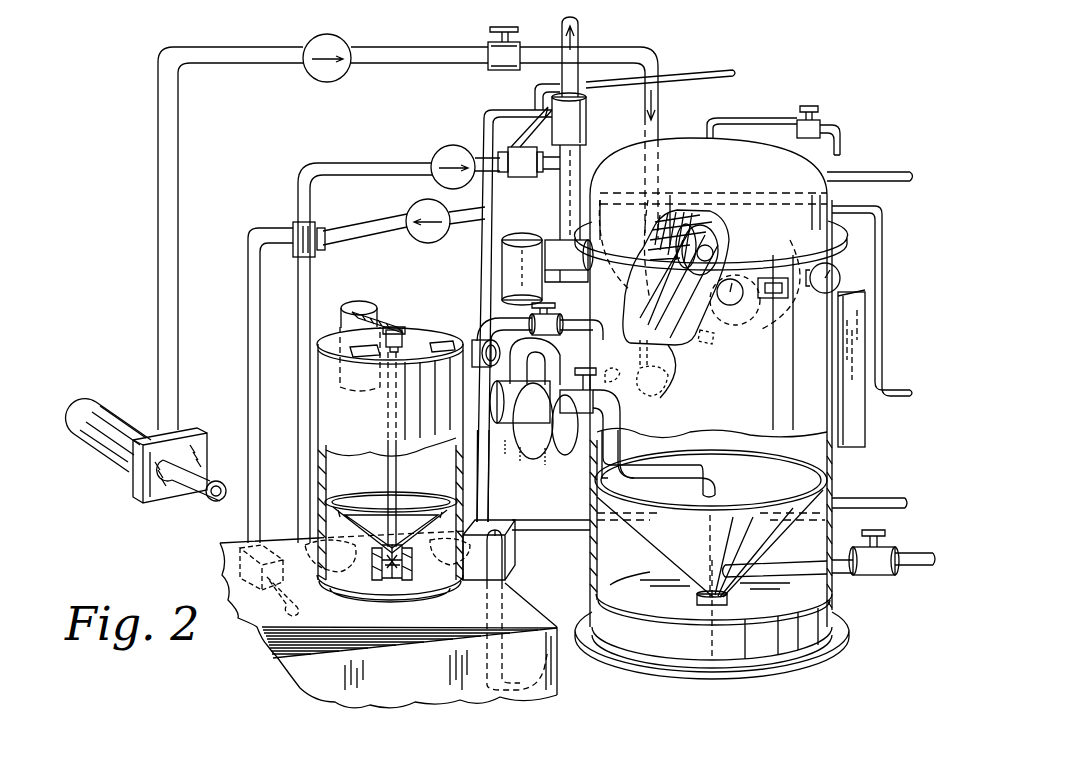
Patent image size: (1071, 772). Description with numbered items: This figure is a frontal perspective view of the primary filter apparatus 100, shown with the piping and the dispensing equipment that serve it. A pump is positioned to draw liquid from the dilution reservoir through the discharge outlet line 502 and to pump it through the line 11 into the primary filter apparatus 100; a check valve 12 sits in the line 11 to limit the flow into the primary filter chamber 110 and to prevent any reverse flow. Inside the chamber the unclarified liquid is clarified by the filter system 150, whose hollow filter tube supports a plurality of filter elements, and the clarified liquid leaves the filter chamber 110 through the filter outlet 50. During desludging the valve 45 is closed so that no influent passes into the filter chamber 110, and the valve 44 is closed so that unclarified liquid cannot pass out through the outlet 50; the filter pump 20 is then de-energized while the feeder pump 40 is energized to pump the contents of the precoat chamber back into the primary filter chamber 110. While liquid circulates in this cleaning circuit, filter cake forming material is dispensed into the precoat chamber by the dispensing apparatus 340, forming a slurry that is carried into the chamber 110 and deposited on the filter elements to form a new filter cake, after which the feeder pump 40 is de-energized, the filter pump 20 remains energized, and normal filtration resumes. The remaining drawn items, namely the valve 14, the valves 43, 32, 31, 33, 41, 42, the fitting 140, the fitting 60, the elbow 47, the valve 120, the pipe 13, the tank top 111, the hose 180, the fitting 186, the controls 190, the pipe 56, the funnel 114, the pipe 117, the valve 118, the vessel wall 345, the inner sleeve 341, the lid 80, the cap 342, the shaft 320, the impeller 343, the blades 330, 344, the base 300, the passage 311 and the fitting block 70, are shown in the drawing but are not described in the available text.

The line 11 is at (430, 48).
The check valve 12 is at (306, 72).
The shut-off valve 14 is at (490, 70).
The filter outlet 50 is at (580, 28).
The valve 44 is at (588, 108).
The check valve 43 is at (432, 152).
The valve 45 is at (515, 178).
The check valve 32 is at (412, 205).
The conduit 31 is at (352, 222).
The conduit 33 is at (292, 312).
The conduit 41 is at (478, 240).
The conduit section 42 is at (490, 470).
The reservoir cup 140 is at (498, 252).
The tee fitting 60 is at (553, 284).
The elbow fitting 47 is at (485, 318).
The valve 120 is at (594, 333).
The filter pump 20 is at (545, 465).
The discharge pipe 13 is at (718, 485).
The primary filter apparatus 100 is at (852, 612).
The tank cover 111 is at (700, 130).
The filter system 150 is at (680, 205).
The hose 180 is at (668, 390).
The fitting 186 is at (715, 342).
The control panel 190 is at (772, 298).
The return pipe 56 is at (882, 228).
The primary filter chamber 110 is at (848, 480).
The funnel 114 is at (710, 558).
The outlet pipe 117 is at (842, 576).
The drain valve 118 is at (890, 545).
The dispensing apparatus 340 is at (367, 438).
The vessel wall 345 is at (318, 403).
The inner sleeve 341 is at (395, 425).
The lid 80 is at (345, 305).
The cap 342 is at (410, 325).
The shaft 320 is at (402, 496).
The impeller cone 343 is at (345, 492).
The blade 330 is at (378, 585).
The blade 344 is at (410, 588).
The base 300 is at (435, 623).
The passage 311 is at (540, 668).
The fitting block 70 is at (518, 520).
The feeder pump 40 is at (505, 552).
The discharge outlet line 502 is at (180, 502).